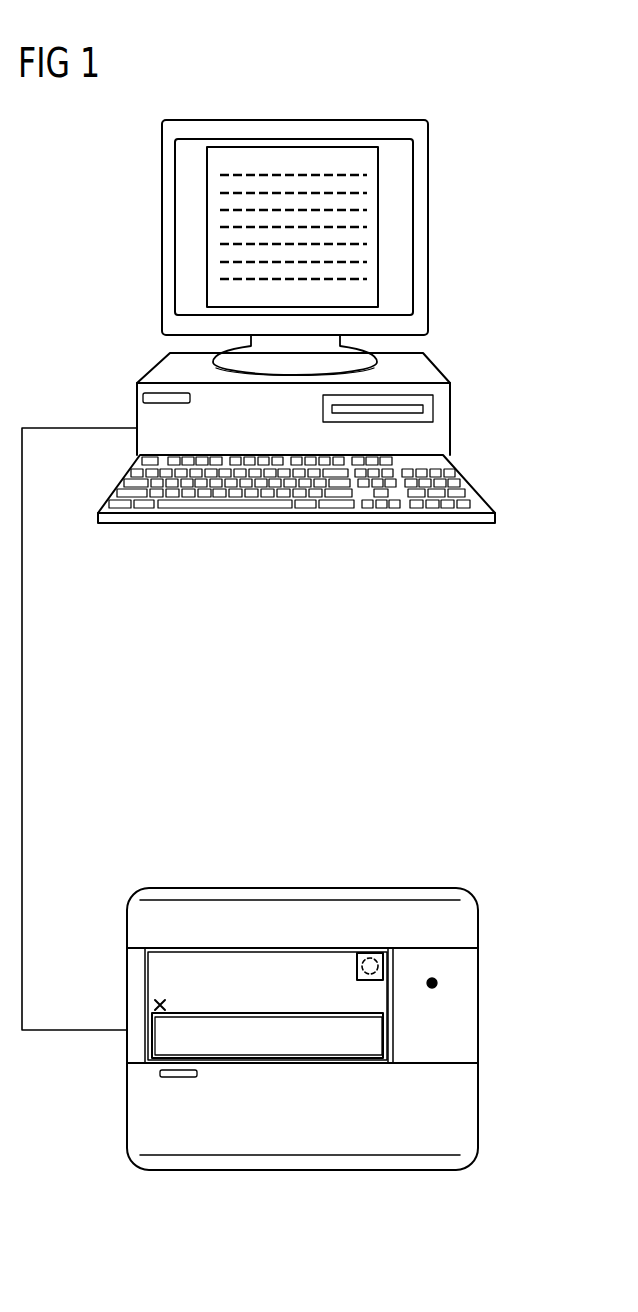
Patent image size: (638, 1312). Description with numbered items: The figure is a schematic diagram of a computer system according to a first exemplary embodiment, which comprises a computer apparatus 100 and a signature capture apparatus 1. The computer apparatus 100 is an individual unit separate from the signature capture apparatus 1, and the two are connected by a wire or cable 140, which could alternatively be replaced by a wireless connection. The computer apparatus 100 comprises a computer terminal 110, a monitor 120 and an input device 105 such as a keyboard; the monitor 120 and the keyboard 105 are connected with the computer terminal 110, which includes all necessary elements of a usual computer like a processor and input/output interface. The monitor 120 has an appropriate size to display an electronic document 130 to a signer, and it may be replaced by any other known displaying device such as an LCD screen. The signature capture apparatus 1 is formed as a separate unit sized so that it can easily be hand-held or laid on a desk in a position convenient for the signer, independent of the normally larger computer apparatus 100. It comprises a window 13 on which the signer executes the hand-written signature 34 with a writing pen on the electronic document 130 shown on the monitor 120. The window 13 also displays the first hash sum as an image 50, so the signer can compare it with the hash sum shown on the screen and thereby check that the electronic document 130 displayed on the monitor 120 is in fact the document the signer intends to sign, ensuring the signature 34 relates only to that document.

The signature capture apparatus 1 is at (507, 994).
The window 13 is at (340, 962).
The hand-written signature 34 is at (223, 970).
The image of the first hash sum 50 is at (348, 1060).
The computer apparatus 100 is at (131, 249).
The input device (keyboard) 105 is at (300, 509).
The computer terminal 110 is at (443, 415).
The monitor 120 is at (428, 229).
The electronic document 130 is at (292, 157).
The cable 140 is at (22, 728).